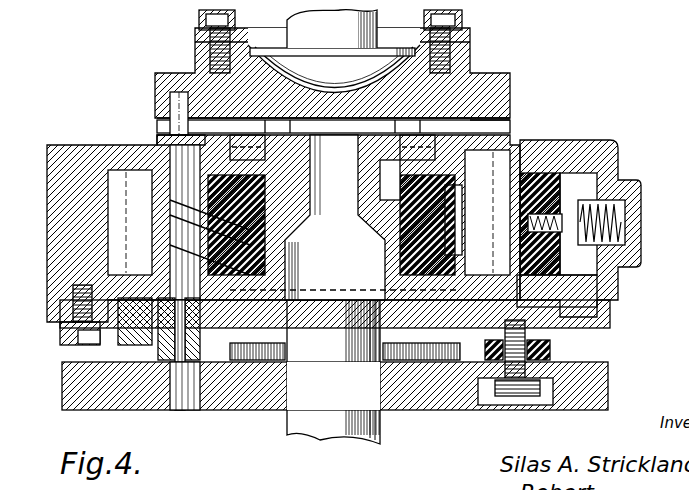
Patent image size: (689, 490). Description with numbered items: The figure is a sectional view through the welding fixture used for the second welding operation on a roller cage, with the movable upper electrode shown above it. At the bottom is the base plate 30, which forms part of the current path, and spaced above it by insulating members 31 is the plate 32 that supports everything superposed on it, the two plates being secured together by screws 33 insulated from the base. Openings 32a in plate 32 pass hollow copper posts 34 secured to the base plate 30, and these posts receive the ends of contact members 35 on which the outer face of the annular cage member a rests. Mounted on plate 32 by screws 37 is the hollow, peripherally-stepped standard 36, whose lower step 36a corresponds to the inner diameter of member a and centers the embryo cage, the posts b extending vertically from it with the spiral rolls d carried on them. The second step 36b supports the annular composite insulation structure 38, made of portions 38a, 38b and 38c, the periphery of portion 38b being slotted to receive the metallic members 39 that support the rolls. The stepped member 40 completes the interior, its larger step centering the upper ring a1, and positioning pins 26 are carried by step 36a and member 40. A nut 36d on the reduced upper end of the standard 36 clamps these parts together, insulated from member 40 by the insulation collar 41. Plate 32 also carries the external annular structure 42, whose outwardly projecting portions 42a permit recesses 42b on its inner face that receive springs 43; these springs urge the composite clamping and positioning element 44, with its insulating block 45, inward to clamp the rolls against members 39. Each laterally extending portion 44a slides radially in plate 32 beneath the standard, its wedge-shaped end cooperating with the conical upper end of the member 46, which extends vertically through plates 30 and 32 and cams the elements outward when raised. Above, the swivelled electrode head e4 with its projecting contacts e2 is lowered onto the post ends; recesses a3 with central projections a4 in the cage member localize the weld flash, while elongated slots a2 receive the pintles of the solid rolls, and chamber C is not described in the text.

The base plate 30 is at (70, 388).
The insulating members 31 is at (545, 352).
The plate 32 is at (60, 336).
The openings 32a is at (155, 345).
The screws 33 is at (505, 400).
The posts 34 is at (185, 378).
The contact members 35 is at (165, 290).
The hollow standard 36 is at (300, 227).
The lower step 36a is at (440, 350).
The second step 36b is at (290, 215).
The nut 36d is at (470, 74).
The screws 37 is at (228, 410).
The annular composite insulation structure 38 is at (300, 250).
The insulation portion 38a is at (282, 285).
The insulation portion 38b is at (285, 260).
The insulation portion 38c is at (285, 182).
The metallic members 39 is at (210, 240).
The member 40 is at (440, 165).
The insulation collar 41 is at (482, 127).
The external annular structure 42 is at (622, 150).
The projecting portions 42a is at (630, 230).
The recesses 42b is at (620, 266).
The springs 43 is at (608, 220).
The clamping and positioning element 44 is at (572, 292).
The laterally extending portion 44a is at (415, 368).
The insulating block 45 is at (598, 132).
The member 46 is at (318, 430).
The positioning pins 26 is at (346, 280).
The annular member a is at (607, 333).
The annular member a1 is at (158, 137).
The elongated slots a2 is at (540, 135).
The recess a3 is at (166, 138).
The projection a4 is at (172, 128).
The posts b is at (107, 170).
The spiral rolls d is at (170, 218).
The projecting contacts e2 is at (178, 118).
The swivelled head e4 is at (498, 94).
The chamber C is at (487, 212).